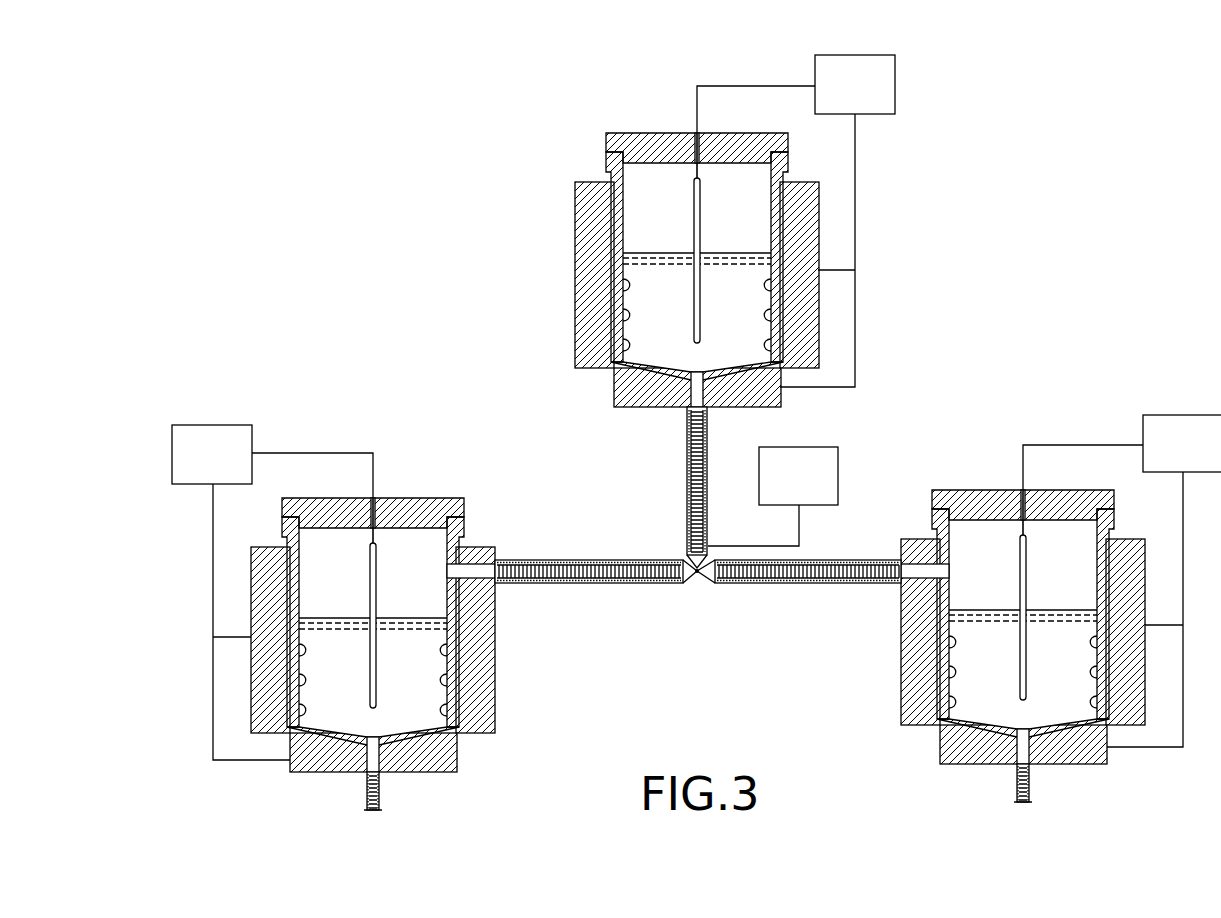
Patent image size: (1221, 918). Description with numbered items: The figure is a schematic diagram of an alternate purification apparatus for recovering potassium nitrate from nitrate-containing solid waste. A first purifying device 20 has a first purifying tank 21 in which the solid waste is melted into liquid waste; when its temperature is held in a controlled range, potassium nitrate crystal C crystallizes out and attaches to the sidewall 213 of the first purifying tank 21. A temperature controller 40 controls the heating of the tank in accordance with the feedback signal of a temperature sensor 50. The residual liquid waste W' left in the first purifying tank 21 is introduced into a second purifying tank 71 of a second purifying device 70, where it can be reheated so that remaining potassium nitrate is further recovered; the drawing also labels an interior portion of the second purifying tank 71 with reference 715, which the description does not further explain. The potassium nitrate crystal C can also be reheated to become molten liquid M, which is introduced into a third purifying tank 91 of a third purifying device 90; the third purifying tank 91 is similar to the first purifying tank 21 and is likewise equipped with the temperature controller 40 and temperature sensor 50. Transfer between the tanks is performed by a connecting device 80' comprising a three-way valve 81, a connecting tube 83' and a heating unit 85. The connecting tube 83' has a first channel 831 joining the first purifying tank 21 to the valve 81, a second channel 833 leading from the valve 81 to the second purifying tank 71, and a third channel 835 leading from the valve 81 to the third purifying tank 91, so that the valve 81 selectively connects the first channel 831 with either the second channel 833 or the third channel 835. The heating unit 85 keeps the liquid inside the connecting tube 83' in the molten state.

The first purifying device 20 is at (694, 254).
The first purifying tank 21 is at (640, 256).
The sidewall 213 is at (612, 220).
The potassium nitrate crystal C is at (622, 348).
The connecting tube 83' is at (660, 412).
The first channel 831 is at (688, 478).
The third channel 835 is at (578, 590).
The second channel 833 is at (806, 592).
The valve 81 is at (700, 586).
The connecting device 80' is at (698, 563).
The heating unit 85 is at (846, 444).
The temperature controller 40 is at (216, 447).
The third purifying device 90 is at (372, 576).
The third purifying tank 91 is at (466, 519).
The temperature sensor 50 is at (376, 566).
The molten liquid M is at (336, 695).
The second purifying device 70 is at (1041, 571).
The second purifying tank 71 is at (930, 516).
The collecting chamber 715 is at (983, 543).
The residual liquid waste W' is at (998, 703).